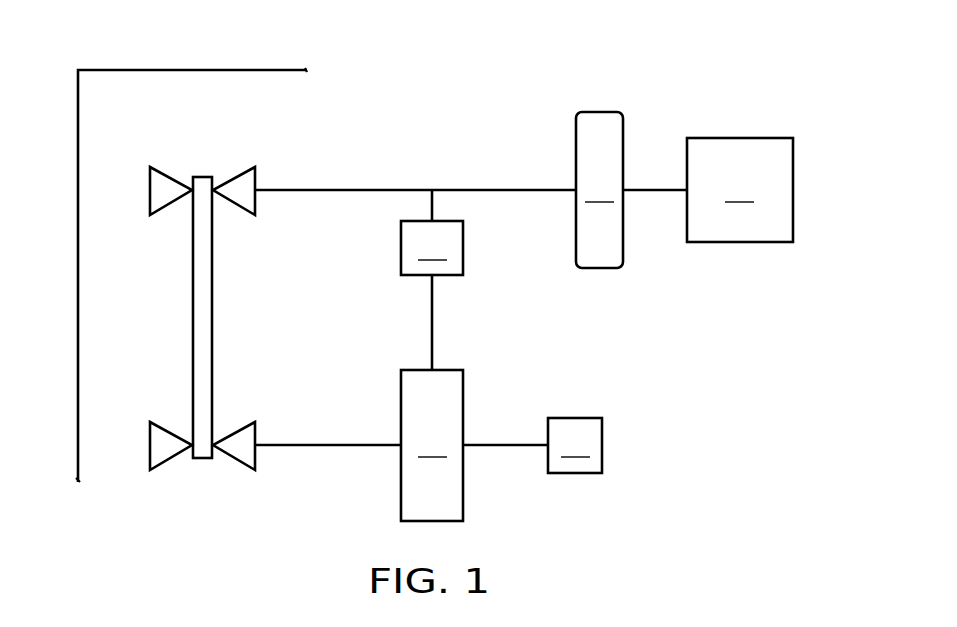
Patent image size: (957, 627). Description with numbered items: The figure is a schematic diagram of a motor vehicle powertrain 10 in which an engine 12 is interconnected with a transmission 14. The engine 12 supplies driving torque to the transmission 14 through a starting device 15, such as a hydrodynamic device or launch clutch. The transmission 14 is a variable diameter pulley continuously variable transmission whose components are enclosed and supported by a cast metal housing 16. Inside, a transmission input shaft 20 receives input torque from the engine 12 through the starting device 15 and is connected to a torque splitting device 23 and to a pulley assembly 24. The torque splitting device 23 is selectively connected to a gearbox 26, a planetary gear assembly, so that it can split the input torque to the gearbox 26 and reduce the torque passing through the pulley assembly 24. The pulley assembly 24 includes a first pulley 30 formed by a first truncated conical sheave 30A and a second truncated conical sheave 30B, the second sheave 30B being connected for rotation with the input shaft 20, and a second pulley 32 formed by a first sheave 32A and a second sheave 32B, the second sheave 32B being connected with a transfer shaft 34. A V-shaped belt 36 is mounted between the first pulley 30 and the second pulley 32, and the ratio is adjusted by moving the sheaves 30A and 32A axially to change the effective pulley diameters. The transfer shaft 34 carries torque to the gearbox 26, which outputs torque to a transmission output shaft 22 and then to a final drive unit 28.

The powertrain 10 is at (764, 90).
The engine 12 is at (740, 190).
The transmission 14 is at (455, 145).
The starting device 15 is at (599, 190).
The housing 16 is at (200, 70).
The transmission input shaft 20 is at (517, 190).
The transmission output shaft 22 is at (517, 445).
The torque splitting device 23 is at (432, 280).
The pulley assembly 24 is at (301, 157).
The gearbox 26 is at (432, 445).
The final drive unit 28 is at (575, 445).
The first pulley 30 is at (182, 162).
The first truncated conical sheave 30A is at (172, 172).
The second truncated conical sheave 30B is at (236, 172).
The second pulley 32 is at (182, 469).
The first truncated conical sheave 32A is at (172, 462).
The second truncated conical sheave 32B is at (238, 462).
The transfer shaft 34 is at (320, 445).
The belt 36 is at (212, 330).